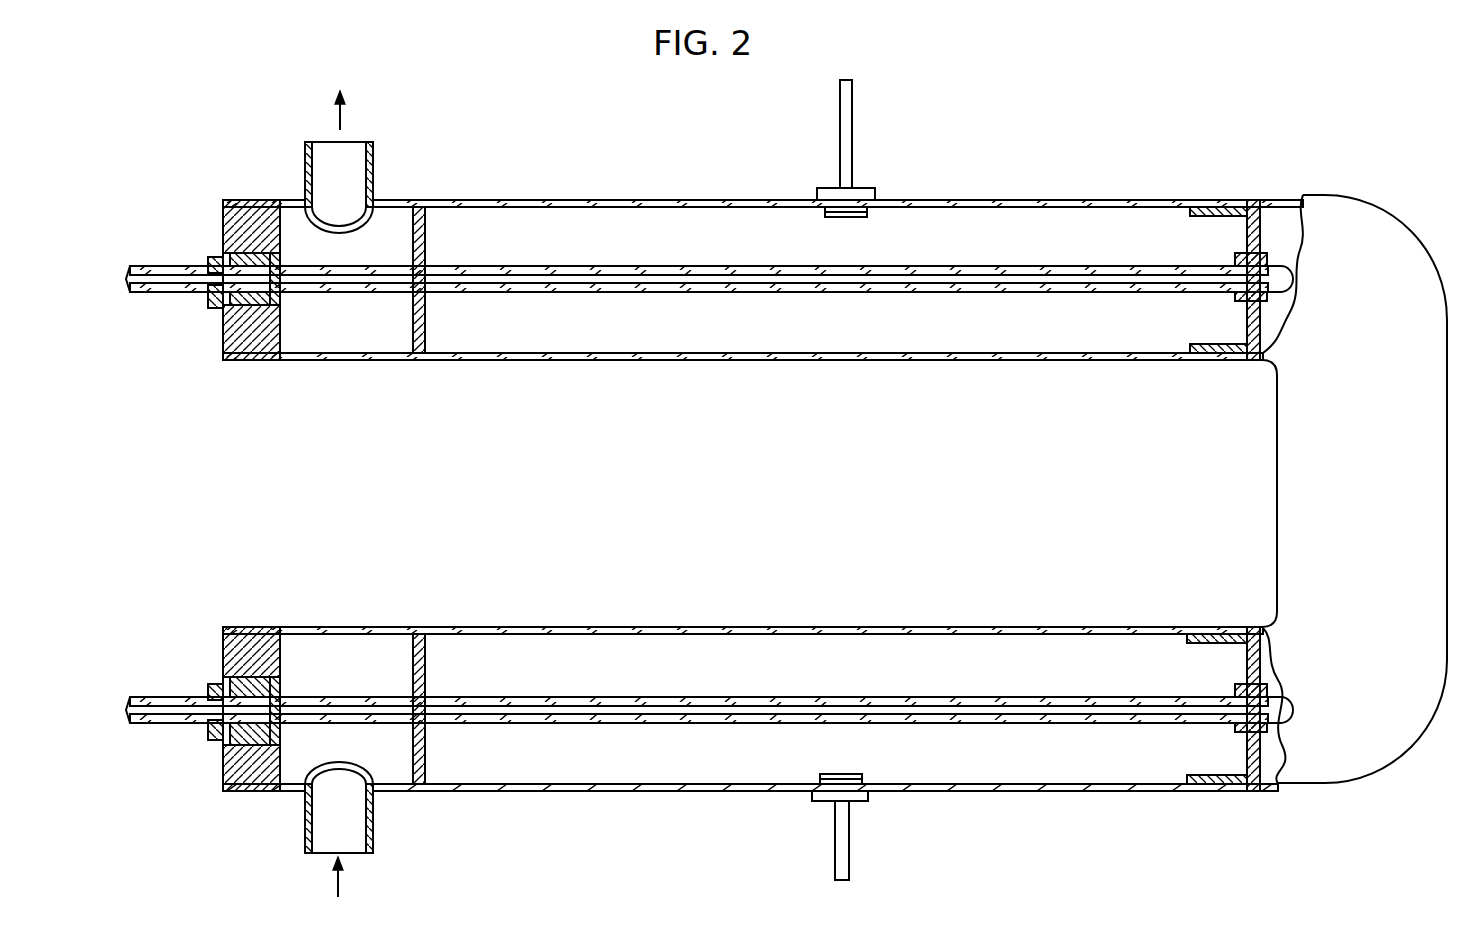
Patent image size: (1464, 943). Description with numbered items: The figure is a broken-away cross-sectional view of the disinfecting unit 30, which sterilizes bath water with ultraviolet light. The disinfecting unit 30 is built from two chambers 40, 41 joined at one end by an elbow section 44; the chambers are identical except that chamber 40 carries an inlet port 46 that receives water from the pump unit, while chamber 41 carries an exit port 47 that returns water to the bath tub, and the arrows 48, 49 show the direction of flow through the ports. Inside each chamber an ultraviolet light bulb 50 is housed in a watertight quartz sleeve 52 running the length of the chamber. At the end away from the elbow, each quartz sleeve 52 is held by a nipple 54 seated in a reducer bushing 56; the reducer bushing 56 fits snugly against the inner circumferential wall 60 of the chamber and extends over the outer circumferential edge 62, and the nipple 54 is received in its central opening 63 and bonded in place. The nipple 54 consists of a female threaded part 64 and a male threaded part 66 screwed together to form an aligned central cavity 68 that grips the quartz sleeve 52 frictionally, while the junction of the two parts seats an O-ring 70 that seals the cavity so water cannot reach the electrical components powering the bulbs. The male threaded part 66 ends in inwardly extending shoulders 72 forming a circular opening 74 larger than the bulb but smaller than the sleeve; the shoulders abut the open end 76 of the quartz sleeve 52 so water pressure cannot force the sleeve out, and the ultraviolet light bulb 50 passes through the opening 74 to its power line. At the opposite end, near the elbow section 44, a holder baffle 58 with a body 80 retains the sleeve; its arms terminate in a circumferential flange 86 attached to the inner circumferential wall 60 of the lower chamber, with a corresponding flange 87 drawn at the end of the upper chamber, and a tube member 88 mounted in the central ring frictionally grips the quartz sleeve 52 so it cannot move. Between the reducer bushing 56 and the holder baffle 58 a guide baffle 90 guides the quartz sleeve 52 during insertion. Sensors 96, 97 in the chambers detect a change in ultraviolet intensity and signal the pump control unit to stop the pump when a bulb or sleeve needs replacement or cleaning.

The disinfecting unit 30 is at (523, 141).
The chamber 40 is at (626, 792).
The chamber 41 is at (650, 361).
The elbow section 44 is at (1277, 490).
The inlet port 46 is at (310, 856).
The exit port 47 is at (368, 142).
The arrow 48 is at (344, 888).
The arrow 49 is at (343, 112).
The ultraviolet light bulb 50 is at (798, 291).
The quartz sleeve 52 is at (1000, 292).
The nipple 54 is at (282, 301).
The reducer bushing 56 is at (225, 346).
The holder baffle 58 is at (1249, 305).
The inner circumferential wall 60 is at (738, 356).
The outer circumferential edge 62 is at (238, 203).
The central opening 63 is at (285, 722).
The female threaded part 64 is at (283, 736).
The male threaded part 66 is at (230, 690).
The central cavity 68 is at (230, 255).
The O-ring 70 is at (273, 361).
The shoulder 72 is at (214, 293).
The circular opening 74 is at (210, 266).
The open end 76 is at (210, 705).
The body 80 is at (1280, 797).
The circumferential flange 86 is at (1205, 792).
The upper end ring 87 is at (1216, 244).
The tube member 88 is at (1293, 295).
The guide baffle 90 is at (426, 206).
The sensor 96 is at (872, 778).
The sensor 97 is at (828, 212).